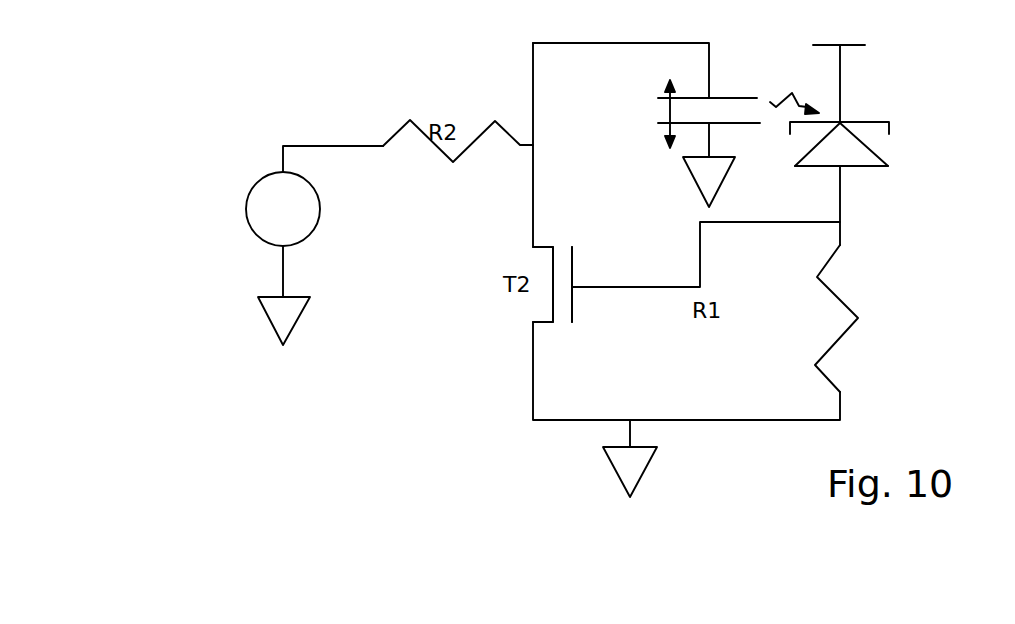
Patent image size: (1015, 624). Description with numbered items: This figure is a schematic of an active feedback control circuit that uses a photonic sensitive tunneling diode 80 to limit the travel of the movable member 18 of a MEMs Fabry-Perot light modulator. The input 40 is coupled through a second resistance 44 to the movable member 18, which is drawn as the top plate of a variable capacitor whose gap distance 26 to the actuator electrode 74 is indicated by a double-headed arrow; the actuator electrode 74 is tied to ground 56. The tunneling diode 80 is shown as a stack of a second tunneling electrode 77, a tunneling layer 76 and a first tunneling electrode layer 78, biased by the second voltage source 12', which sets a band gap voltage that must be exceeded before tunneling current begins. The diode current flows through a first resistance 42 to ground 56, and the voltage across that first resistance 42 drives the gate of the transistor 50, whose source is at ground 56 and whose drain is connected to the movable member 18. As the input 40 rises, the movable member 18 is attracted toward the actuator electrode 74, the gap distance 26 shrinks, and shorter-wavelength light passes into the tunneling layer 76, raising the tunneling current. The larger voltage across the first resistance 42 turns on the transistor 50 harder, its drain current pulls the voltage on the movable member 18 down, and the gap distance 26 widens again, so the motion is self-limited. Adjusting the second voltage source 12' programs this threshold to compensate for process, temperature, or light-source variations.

The voltage source VDD2 12' is at (877, 65).
The movable member 18 is at (727, 96).
The gap distance 26 is at (674, 112).
The input Vin 40 is at (322, 197).
The resistance R1 42 is at (848, 335).
The resistance R2 44 is at (478, 140).
The FET T2 50 is at (540, 245).
The GND 56 is at (303, 297).
The actuator electrode 74 is at (730, 126).
The tunneling layer 76 is at (841, 144).
The second tunneling electrode 77 is at (866, 121).
The first tunneling electrode layer 78 is at (868, 168).
The photonic sensitive tunneling diode 80 is at (889, 154).